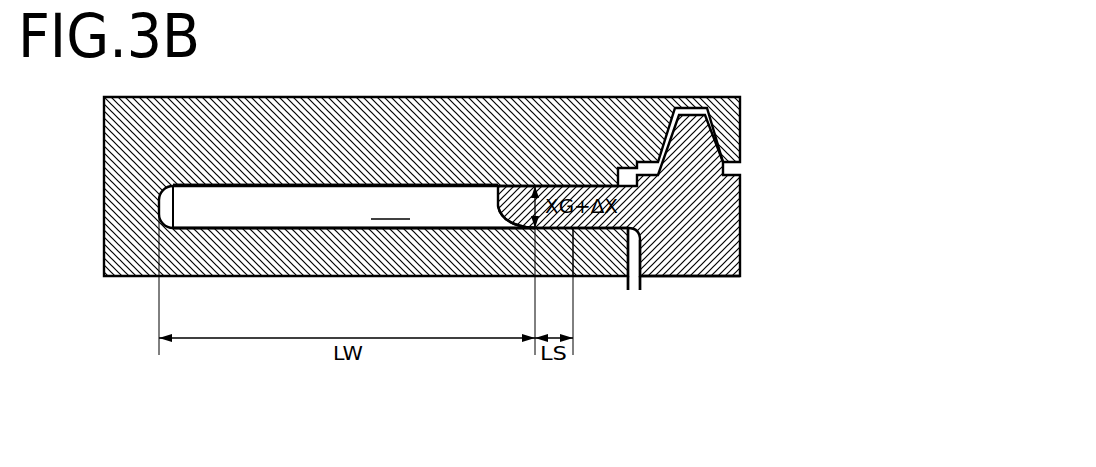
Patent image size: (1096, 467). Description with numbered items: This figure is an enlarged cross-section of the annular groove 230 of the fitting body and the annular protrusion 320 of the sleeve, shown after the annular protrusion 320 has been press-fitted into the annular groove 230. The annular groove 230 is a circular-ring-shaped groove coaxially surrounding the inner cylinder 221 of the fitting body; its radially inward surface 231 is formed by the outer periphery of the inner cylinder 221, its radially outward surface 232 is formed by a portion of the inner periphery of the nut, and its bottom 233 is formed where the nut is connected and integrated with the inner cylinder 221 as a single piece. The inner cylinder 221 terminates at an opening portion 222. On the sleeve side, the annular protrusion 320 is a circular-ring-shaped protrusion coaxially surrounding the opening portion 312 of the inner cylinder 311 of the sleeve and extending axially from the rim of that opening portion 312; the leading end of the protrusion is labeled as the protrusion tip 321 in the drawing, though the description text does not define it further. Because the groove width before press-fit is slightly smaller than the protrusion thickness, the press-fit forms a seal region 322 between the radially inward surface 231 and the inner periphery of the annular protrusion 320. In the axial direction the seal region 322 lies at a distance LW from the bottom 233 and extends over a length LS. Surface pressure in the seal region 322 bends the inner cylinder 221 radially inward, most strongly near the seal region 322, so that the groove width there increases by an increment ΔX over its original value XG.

The inner cylinder 221 is at (388, 258).
The annular groove 230 is at (354, 206).
The radially inward surface 231 is at (270, 228).
The radially outward surface 232 is at (348, 185).
The bottom 233 is at (173, 203).
The annular protrusion 320 is at (571, 186).
The tip of insert member 321 is at (497, 196).
The seal region 322 is at (573, 277).
The opening portion 222 is at (577, 228).
The inner cylinder 311 is at (697, 255).
The opening portion 312 is at (640, 276).